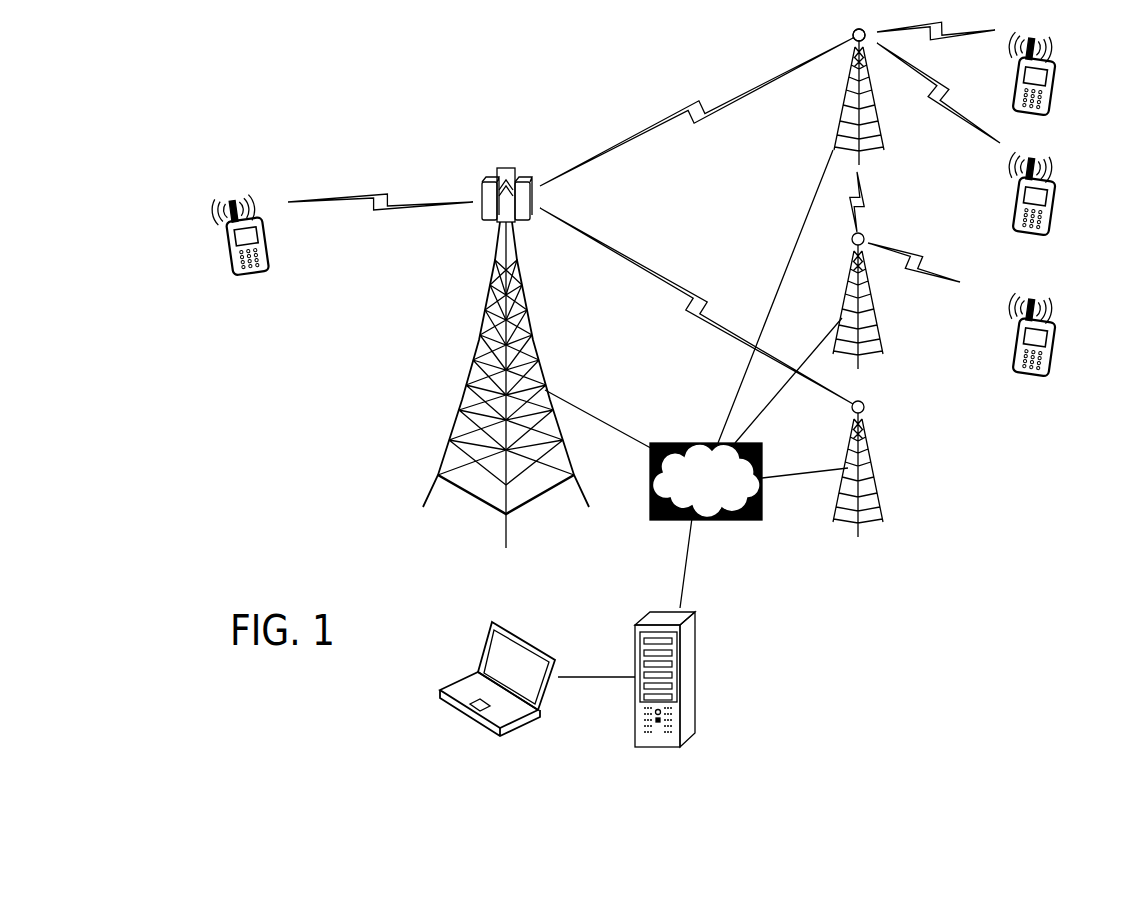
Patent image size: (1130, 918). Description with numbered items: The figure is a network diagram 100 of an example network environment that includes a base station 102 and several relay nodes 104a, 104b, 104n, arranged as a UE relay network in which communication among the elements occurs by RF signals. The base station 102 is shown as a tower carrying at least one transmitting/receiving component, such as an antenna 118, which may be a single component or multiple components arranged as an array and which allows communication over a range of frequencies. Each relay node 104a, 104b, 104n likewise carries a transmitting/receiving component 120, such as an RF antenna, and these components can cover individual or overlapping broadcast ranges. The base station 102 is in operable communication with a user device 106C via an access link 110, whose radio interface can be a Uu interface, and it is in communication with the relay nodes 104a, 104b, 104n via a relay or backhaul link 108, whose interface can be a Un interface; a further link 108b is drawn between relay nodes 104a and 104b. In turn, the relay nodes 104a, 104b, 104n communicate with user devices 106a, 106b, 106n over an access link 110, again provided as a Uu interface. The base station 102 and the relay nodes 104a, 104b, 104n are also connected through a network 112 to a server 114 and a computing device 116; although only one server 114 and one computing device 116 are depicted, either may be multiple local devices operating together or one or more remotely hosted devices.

The network diagram 100 is at (224, 112).
The base station 102 is at (462, 402).
The relay node 104a is at (882, 126).
The relay node 104b is at (882, 330).
The relay node 104n is at (882, 495).
The user device 106a is at (1060, 78).
The user device 106b is at (1060, 345).
The user device 106C is at (229, 250).
The user device 106n is at (1060, 200).
The backhaul link 108 is at (666, 120).
The wireless link between access points 108b is at (864, 197).
The access link 110 is at (372, 195).
The network 112 is at (689, 488).
The server 114 is at (697, 655).
The computing device 116 is at (482, 646).
The antenna 118 is at (504, 166).
The transmitting/receiving component 120 is at (852, 34).